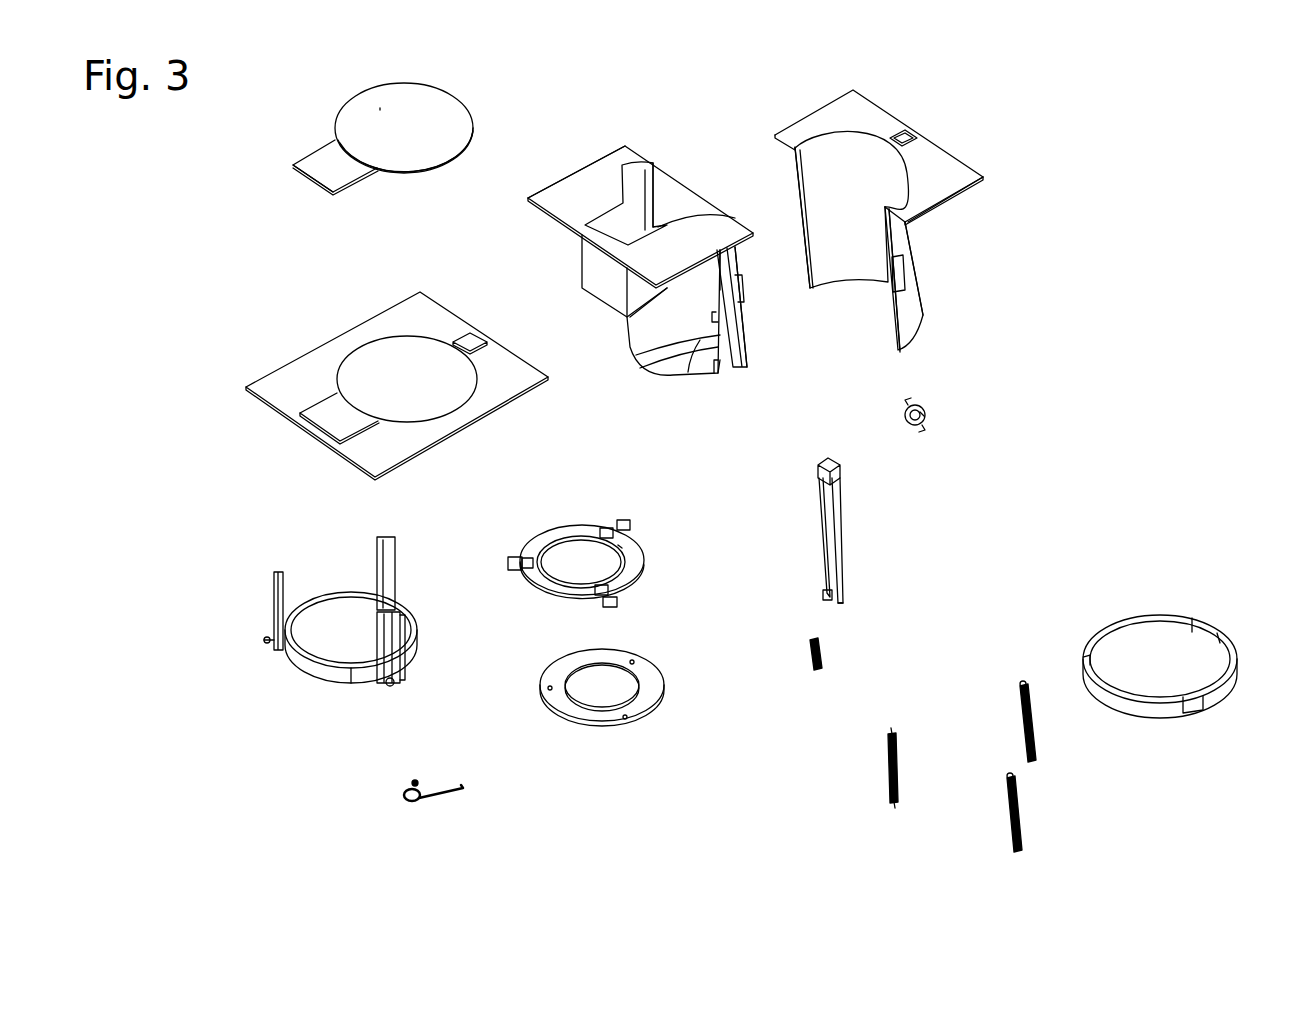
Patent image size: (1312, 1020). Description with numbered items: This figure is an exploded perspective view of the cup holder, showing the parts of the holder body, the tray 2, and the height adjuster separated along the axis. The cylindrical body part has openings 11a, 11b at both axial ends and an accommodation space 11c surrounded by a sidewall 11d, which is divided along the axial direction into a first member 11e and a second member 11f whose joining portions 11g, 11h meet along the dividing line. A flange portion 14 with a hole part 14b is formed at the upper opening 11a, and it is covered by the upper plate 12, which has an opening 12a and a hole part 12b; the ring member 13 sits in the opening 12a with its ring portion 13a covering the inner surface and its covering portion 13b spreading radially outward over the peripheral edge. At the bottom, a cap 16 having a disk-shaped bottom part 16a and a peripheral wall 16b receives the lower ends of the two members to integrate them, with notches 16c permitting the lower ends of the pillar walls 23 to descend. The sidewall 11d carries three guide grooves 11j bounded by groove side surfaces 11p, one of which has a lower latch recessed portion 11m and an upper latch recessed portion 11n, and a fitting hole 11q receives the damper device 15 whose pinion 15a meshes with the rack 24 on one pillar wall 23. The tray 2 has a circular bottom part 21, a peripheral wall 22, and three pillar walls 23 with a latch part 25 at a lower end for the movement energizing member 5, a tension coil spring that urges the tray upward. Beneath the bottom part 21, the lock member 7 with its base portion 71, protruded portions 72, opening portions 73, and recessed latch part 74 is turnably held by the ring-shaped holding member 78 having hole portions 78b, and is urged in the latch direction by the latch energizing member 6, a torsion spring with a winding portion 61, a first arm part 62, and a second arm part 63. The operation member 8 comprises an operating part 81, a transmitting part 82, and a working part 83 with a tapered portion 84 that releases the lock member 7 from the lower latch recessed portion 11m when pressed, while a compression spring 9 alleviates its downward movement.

The tray 2 is at (343, 619).
The bottom part 21 is at (330, 612).
The peripheral wall 22 is at (302, 612).
The pillar walls 23 is at (276, 572).
The rack 24 is at (410, 638).
The latch part 25 is at (263, 642).
The movement energizing member 5 is at (888, 770).
The latch energizing member 6 is at (408, 790).
The winding portion 61 is at (404, 800).
The first arm part 62 is at (414, 779).
The second arm part 63 is at (434, 800).
The lock member 7 is at (584, 556).
The base portion 71 is at (560, 530).
The protruded portions 72 is at (512, 558).
The opening portions 73 is at (606, 527).
The latch part 74 is at (623, 547).
The holding member 78 is at (597, 705).
The hole portions 78b is at (548, 686).
The operation member 8 is at (836, 541).
The operating part 81 is at (840, 463).
The transmitting part 82 is at (838, 510).
The working part 83 is at (830, 605).
The tapered portion 84 is at (822, 596).
The compression spring 9 is at (810, 658).
The opening 11a is at (660, 160).
The opening 11b is at (836, 362).
The accommodation space 11c is at (735, 183).
The sidewall 11d is at (645, 318).
The first member 11e is at (955, 172).
The second member 11f is at (568, 180).
The joining portion 11g is at (800, 205).
The joining portion 11h is at (655, 205).
The guide grooves 11j is at (700, 345).
The lower latch recessed portion 11m is at (718, 378).
The upper latch recessed portion 11n is at (650, 340).
The groove side surfaces 11p is at (690, 350).
The fitting hole 11q is at (745, 290).
The upper plate 12 is at (399, 356).
The opening 12a is at (440, 335).
The hole part 12b is at (485, 335).
The ring member 13 is at (412, 84).
The ring portion 13a is at (335, 118).
The covering portion 13b is at (355, 100).
The flange portion 14 is at (884, 198).
The hole part 14b is at (915, 132).
The damper device 15 is at (926, 410).
The pinion 15a is at (925, 420).
The cap 16 is at (1162, 665).
The bottom part 16a is at (1190, 650).
The peripheral wall 16b is at (1228, 684).
The notches 16c is at (1083, 658).